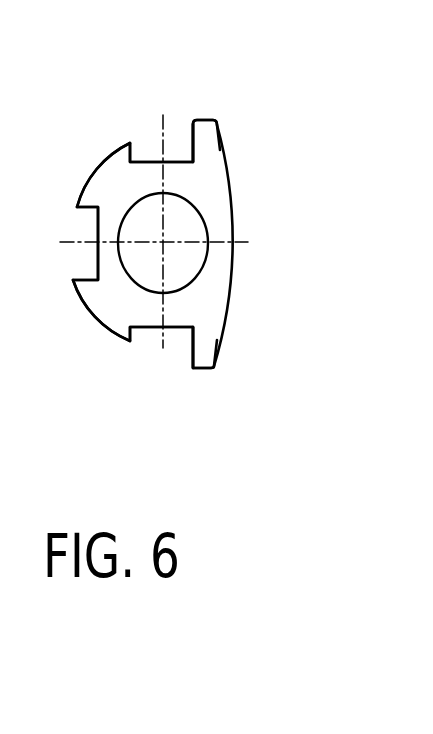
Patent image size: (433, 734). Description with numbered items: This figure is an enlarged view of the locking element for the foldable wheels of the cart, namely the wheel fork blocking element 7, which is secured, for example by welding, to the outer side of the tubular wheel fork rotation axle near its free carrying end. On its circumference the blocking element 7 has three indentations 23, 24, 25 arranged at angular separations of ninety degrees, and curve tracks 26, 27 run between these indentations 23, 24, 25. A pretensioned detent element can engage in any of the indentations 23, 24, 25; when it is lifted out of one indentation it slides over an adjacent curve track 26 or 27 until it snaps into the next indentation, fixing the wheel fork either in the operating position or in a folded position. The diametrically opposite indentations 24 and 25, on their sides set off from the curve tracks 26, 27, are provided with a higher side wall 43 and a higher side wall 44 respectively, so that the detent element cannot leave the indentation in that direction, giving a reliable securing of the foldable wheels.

The wheel fork blocking element 7 is at (217, 287).
The indentation 23 is at (90, 266).
The indentation 24 is at (150, 333).
The indentation 25 is at (187, 153).
The curve track 26 is at (92, 332).
The curve track 27 is at (93, 166).
The higher side wall 43 is at (182, 368).
The higher side wall 44 is at (185, 122).